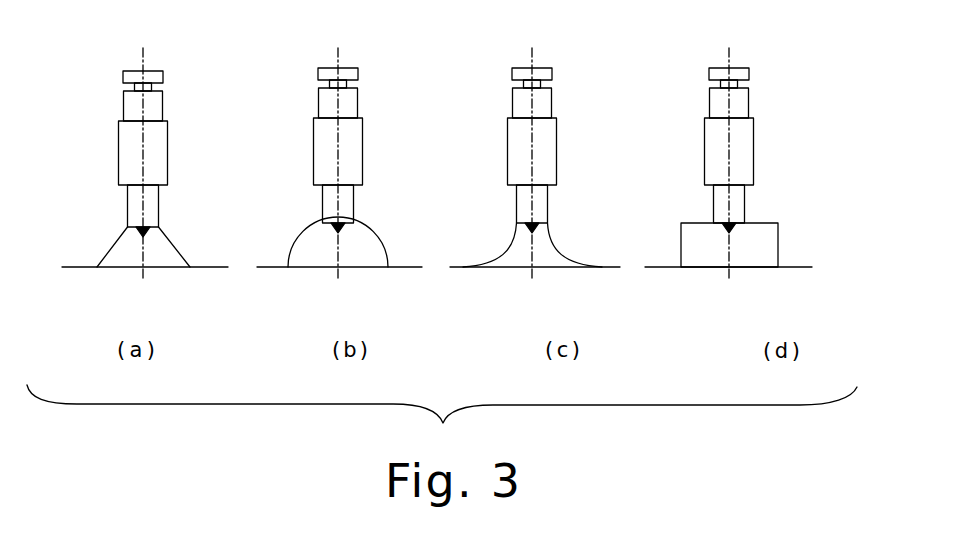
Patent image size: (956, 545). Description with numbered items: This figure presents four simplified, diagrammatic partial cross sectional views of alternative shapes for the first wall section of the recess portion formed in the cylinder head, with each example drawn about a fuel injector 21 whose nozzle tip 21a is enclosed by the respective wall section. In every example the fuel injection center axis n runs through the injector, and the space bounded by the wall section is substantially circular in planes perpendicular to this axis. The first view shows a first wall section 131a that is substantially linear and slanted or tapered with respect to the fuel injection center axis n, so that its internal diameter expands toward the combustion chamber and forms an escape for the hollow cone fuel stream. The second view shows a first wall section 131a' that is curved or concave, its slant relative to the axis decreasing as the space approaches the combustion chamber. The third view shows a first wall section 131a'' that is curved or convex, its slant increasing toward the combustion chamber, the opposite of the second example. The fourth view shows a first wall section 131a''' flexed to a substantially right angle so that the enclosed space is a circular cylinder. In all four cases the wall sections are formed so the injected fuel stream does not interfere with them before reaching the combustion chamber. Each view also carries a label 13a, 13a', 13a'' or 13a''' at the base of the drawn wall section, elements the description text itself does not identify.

The fuel injection center axis n is at (146, 62).
The fuel injector 21 is at (168, 167).
The nozzle tip 21a is at (152, 228).
The first wall section 131a is at (119, 226).
The first wall section 131a' is at (310, 226).
The first wall section 131a'' is at (513, 226).
The first wall section 131a''' is at (699, 223).
The substrate surface 13a is at (145, 295).
The substrate surface 13a' is at (343, 292).
The substrate surface 13a'' is at (543, 292).
The substrate surface 13a''' is at (729, 295).